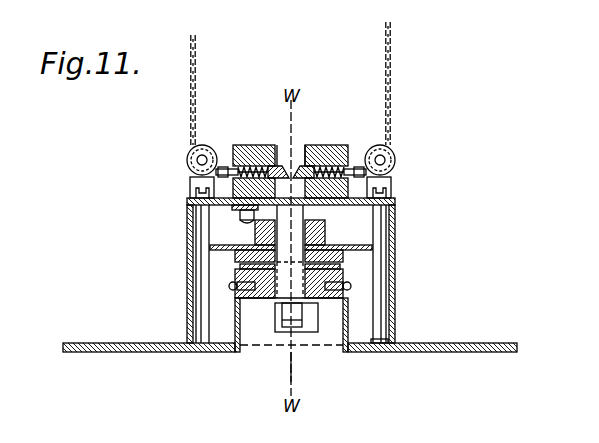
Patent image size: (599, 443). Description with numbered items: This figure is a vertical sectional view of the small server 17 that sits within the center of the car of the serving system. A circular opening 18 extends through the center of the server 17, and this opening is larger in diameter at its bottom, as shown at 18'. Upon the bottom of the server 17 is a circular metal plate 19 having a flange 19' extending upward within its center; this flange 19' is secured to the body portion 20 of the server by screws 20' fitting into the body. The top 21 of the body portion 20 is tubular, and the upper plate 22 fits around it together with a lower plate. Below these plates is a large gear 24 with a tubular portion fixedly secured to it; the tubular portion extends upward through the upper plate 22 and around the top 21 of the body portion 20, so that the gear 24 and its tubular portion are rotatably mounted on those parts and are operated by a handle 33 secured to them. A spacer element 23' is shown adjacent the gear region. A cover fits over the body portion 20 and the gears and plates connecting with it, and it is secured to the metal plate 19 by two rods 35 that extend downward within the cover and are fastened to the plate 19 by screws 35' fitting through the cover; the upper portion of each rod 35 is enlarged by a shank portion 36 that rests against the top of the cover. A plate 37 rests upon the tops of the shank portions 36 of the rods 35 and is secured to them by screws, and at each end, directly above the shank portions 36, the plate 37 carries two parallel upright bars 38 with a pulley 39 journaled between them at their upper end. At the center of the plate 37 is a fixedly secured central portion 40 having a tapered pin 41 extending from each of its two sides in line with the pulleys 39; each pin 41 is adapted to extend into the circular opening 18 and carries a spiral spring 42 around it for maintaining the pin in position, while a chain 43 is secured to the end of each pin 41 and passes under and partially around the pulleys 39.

The small server 17 is at (182, 274).
The circular opening 18 is at (301, 146).
The enlarged lower portion of circular opening 18' is at (291, 321).
The metal plate 19 is at (290, 335).
The flange 19' is at (278, 325).
The body portion 20 is at (300, 282).
The screws 20' is at (299, 294).
The top of body portion 21 is at (295, 227).
The upper plate 22 is at (336, 247).
The spacer plate 23' is at (241, 262).
The large gear 24 is at (343, 257).
The handle 33 is at (242, 217).
The rods 35 is at (366, 274).
The screws 35' is at (384, 356).
The shank portion 36 is at (395, 236).
The plate 37 is at (395, 202).
The upright bars 38 is at (391, 183).
The pulley 39 is at (291, 151).
The central portion 40 is at (250, 145).
The tapered pin 41 is at (286, 172).
The spiral spring 42 is at (316, 173).
The chain 43 is at (393, 94).